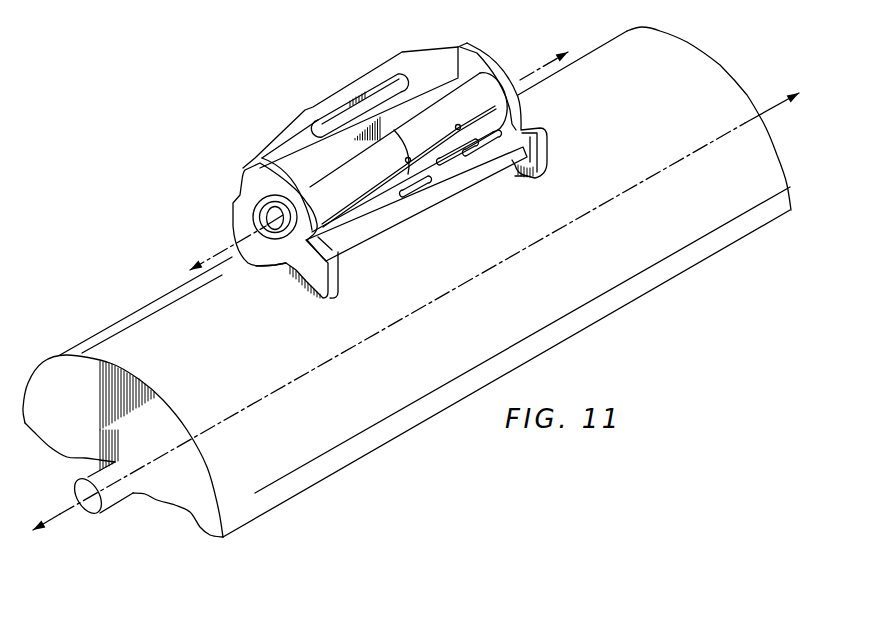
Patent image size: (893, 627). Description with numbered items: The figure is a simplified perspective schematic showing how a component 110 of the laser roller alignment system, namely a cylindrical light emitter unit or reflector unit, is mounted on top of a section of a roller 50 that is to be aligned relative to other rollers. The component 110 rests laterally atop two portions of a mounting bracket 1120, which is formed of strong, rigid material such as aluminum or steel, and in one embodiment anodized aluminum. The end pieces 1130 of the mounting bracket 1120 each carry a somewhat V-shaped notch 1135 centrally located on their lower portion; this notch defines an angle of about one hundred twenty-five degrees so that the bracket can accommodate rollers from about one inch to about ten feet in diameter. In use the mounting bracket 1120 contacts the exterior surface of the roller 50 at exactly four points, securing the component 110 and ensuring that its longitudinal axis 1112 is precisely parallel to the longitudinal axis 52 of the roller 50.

The component of the laser roller alignment system 110 is at (422, 178).
The roller 50 is at (411, 282).
The longitudinal axis of the roller 52 is at (55, 508).
The longitudinal axis of the alignment component 1112 is at (215, 253).
The mounting bracket 1120 is at (560, 110).
The end pieces of the mounting bracket 1130 is at (548, 157).
The V-shaped notch 1135 is at (268, 265).